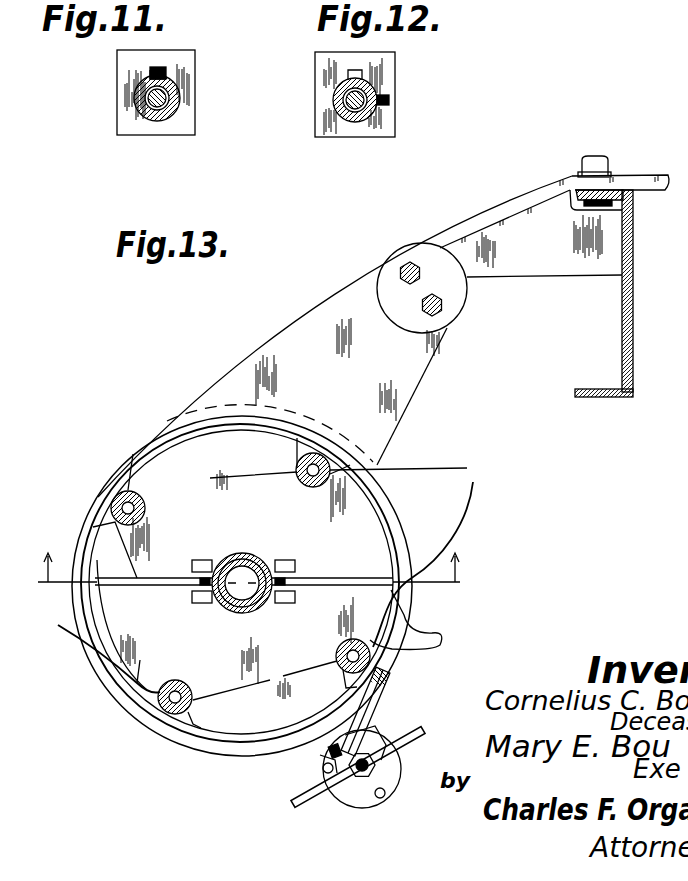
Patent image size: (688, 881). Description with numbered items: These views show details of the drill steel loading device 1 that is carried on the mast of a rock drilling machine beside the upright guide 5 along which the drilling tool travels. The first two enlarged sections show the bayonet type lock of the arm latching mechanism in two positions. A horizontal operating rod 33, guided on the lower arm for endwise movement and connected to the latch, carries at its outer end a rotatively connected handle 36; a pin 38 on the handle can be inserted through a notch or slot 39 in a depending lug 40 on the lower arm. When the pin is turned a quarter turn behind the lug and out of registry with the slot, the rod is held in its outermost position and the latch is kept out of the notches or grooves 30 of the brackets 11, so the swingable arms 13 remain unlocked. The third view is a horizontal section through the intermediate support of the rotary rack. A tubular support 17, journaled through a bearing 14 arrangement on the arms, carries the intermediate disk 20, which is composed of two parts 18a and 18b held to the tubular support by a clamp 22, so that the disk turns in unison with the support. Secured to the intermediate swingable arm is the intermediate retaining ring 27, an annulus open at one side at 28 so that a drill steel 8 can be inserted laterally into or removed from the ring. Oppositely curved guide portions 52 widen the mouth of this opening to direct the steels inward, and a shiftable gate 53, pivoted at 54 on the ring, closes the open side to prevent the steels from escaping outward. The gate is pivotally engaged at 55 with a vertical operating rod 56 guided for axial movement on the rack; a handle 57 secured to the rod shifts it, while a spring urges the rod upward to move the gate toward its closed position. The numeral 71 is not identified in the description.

In FIG. 13, the drill steel loading device 1 is at (186, 393).
In FIG. 13, the upright guide 5 is at (604, 307).
In FIG. 13, the drill steel 8 is at (150, 505).
In FIG. 13, the brackets 11 is at (529, 202).
In FIG. 13, the swingable arms 13 is at (298, 333).
In FIG. 13, the bearing 14 is at (323, 369).
In FIG. 13, the tubular support 17 is at (240, 606).
In FIG. 13, the first part of intermediate disk 18a is at (160, 463).
In FIG. 13, the second part of intermediate disk 18b is at (250, 715).
In FIG. 13, the intermediate disk 20 is at (370, 530).
In FIG. 13, the clamp 22 is at (230, 556).
In FIG. 13, the intermediate retaining ring 27 is at (185, 740).
In FIG. 13, the open side of retaining ring 28 is at (392, 660).
In FIG. 12, the notches or grooves 30 is at (557, 13).
In FIG. 11, the operating rod 33 is at (150, 100).
In FIG. 12, the operating rod 33 is at (343, 103).
In FIG. 11, the handle 36 is at (173, 100).
In FIG. 12, the handle 36 is at (372, 92).
In FIG. 11, the pin 38 is at (142, 78).
In FIG. 12, the pin 38 is at (389, 100).
In FIG. 11, the notch or slot 39 is at (158, 67).
In FIG. 12, the notch or slot 39 is at (361, 76).
In FIG. 11, the depending lug 40 is at (195, 119).
In FIG. 12, the depending lug 40 is at (387, 128).
In FIG. 13, the curved guide portions 52 is at (443, 648).
In FIG. 13, the gates 53 is at (386, 680).
In FIG. 13, the gate pivot 54 is at (350, 710).
In FIG. 13, the pivotal connection 55 is at (312, 750).
In FIG. 13, the vertical operating rod 56 is at (362, 790).
In FIG. 13, the handle 57 is at (298, 799).
In FIG. 13, the brake lever 71 is at (261, 580).